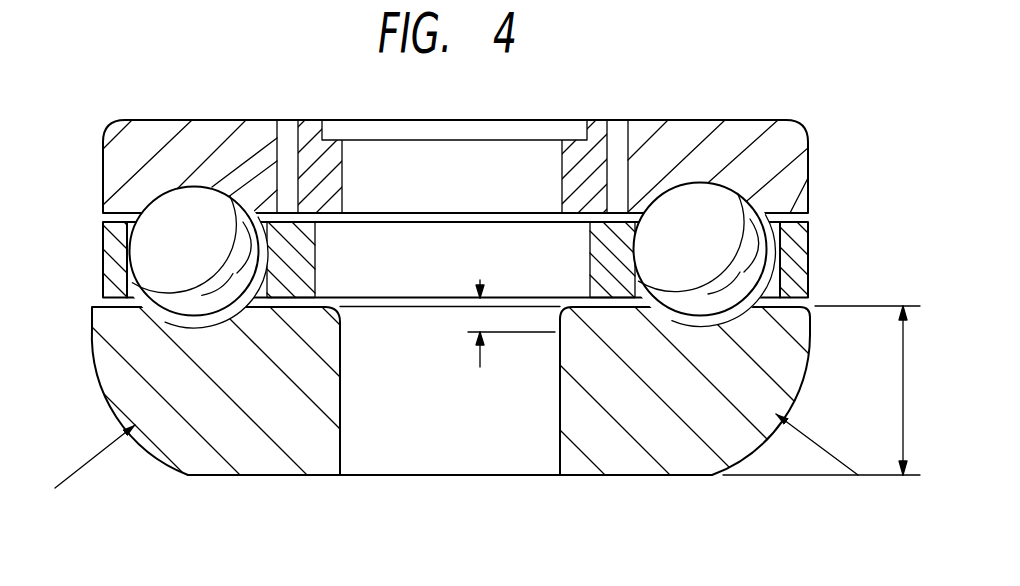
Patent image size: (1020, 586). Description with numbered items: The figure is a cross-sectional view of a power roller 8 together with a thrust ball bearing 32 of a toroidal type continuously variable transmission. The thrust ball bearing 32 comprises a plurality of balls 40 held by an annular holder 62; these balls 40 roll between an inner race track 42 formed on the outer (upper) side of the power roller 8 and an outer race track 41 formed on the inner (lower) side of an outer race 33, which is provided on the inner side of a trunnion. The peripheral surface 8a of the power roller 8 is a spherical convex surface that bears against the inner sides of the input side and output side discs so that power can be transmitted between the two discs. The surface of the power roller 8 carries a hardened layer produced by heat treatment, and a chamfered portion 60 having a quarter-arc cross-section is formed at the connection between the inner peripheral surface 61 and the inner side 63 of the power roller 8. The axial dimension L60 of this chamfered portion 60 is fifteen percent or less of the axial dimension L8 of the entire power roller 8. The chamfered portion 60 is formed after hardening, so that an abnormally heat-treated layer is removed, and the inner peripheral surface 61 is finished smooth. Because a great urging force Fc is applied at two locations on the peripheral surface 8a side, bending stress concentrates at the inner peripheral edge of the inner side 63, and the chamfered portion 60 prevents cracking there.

The power roller 8 is at (429, 417).
The peripheral surface 8a is at (103, 373).
The thrust ball bearing 32 is at (186, 198).
The outer race 33 is at (264, 130).
The balls 40 is at (143, 252).
The outer race track 41 is at (690, 189).
The inner race track 42 is at (212, 320).
The chamfered portion 60 is at (578, 308).
The inner peripheral surface 61 is at (213, 415).
The annular holder 62 is at (810, 254).
The inner side 63 is at (605, 304).
The axial dimension of the chamfered portion L60 is at (472, 318).
The axial dimension of the power roller L8 is at (830, 390).
The urging force Fc is at (93, 462).